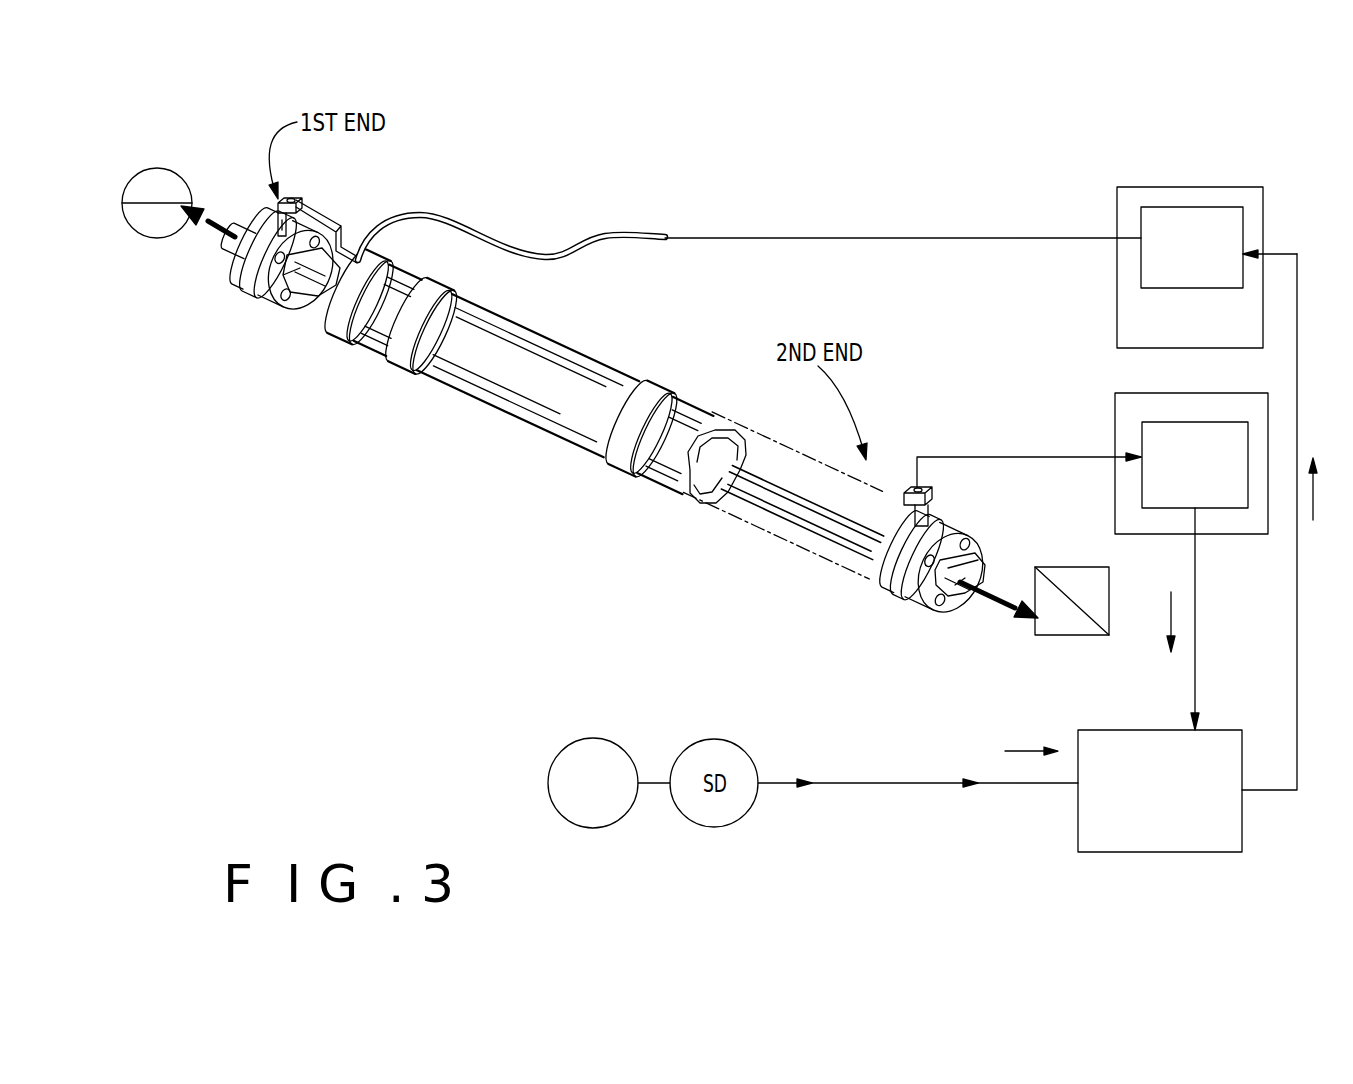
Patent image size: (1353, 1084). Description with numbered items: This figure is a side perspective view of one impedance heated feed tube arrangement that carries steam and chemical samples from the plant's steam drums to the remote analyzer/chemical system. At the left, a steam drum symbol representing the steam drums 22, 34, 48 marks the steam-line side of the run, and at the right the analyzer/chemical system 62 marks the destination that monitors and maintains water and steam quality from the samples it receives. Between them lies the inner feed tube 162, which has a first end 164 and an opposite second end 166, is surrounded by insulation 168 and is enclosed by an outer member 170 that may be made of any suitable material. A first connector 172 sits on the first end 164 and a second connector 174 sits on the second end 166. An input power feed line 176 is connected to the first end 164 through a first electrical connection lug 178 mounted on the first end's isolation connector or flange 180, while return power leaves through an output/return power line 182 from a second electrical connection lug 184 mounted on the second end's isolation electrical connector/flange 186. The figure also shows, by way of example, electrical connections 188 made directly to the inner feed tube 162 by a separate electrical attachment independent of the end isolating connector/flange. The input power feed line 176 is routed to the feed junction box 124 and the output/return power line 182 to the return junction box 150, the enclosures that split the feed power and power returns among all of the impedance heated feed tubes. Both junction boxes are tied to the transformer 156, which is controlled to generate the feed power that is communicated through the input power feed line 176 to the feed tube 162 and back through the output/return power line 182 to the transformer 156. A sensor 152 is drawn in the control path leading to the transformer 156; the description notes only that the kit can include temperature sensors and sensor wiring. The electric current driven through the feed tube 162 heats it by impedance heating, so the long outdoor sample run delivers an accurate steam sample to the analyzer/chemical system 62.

The steam drum 22 is at (147, 180).
The intermediate pressure steam drum 34 is at (162, 217).
The low pressure steam drum 48 is at (157, 168).
The analyzer/chemical system 62 is at (1065, 636).
The feed junction box 124 is at (1195, 207).
The return junction box 150 is at (1178, 421).
The sensor 152 is at (594, 829).
The transformer 156 is at (1162, 853).
The feed tube 162 is at (779, 507).
The first end 164 is at (280, 312).
The second end 166 is at (887, 560).
The insulation 168 is at (698, 500).
The outer member 170 is at (553, 413).
The first connector 172 is at (262, 290).
The second connector 174 is at (891, 596).
The input power feed line 176 is at (324, 218).
The first electrical connection lug 178 is at (293, 197).
The isolation connector or flange 180 is at (236, 261).
The output/return power line 182 is at (1073, 456).
The second electrical connection lug 184 is at (933, 498).
The isolation electrical connector/flange 186 is at (965, 536).
The electrical connections 188 is at (365, 235).